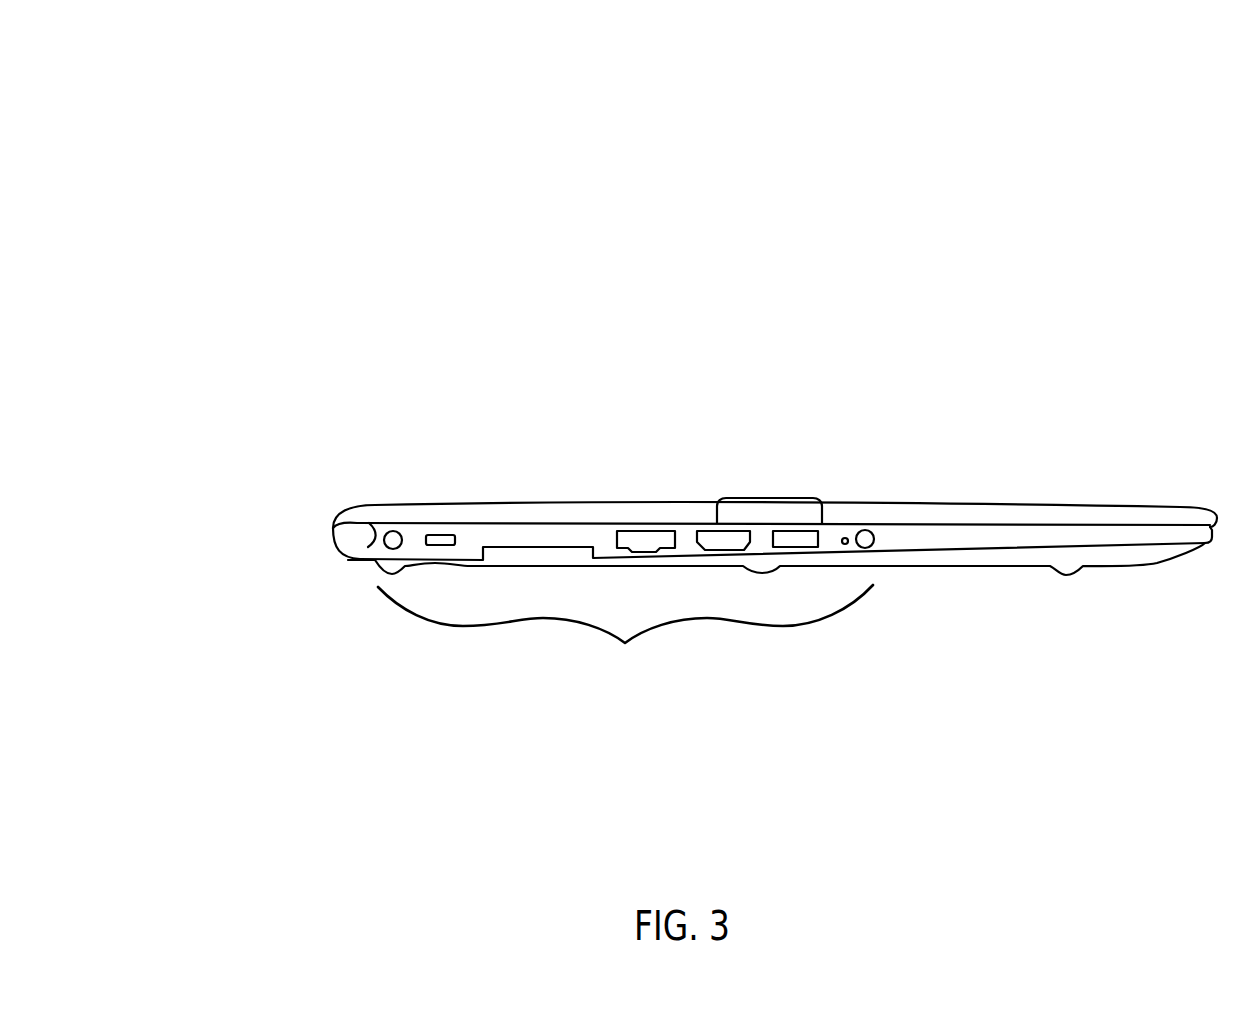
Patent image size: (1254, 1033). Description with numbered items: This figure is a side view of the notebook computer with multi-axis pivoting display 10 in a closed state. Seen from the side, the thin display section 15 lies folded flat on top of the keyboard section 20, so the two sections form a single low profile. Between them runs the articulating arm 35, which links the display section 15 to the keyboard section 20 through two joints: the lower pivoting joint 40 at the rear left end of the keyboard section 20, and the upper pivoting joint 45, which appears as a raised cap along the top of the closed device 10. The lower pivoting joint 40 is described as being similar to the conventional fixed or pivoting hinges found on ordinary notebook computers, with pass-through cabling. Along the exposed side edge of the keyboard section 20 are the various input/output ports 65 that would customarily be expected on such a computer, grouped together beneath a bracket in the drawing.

The notebook computer with multi-axis pivoting display 10 is at (337, 206).
The display section 15 is at (930, 505).
The keyboard section 20 is at (983, 553).
The articulating arm 35 is at (540, 512).
The lower pivoting joint 40 is at (350, 543).
The upper pivoting joint 45 is at (745, 500).
The input/output ports 65 is at (623, 643).